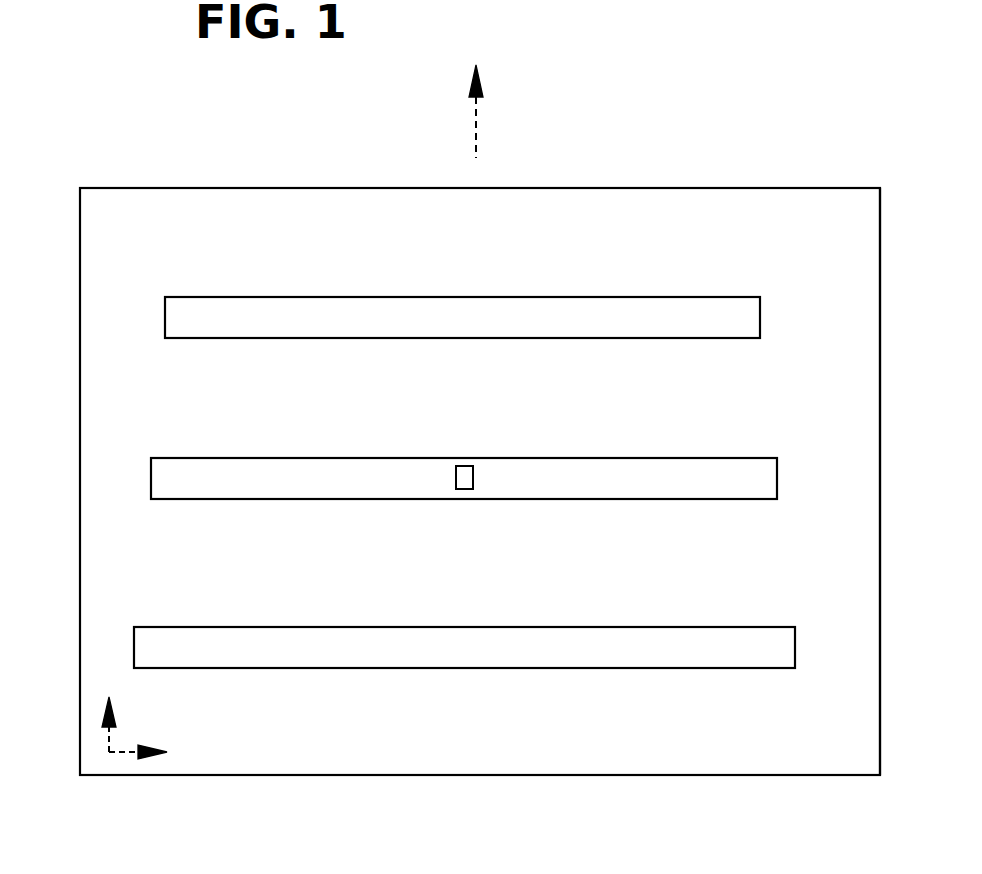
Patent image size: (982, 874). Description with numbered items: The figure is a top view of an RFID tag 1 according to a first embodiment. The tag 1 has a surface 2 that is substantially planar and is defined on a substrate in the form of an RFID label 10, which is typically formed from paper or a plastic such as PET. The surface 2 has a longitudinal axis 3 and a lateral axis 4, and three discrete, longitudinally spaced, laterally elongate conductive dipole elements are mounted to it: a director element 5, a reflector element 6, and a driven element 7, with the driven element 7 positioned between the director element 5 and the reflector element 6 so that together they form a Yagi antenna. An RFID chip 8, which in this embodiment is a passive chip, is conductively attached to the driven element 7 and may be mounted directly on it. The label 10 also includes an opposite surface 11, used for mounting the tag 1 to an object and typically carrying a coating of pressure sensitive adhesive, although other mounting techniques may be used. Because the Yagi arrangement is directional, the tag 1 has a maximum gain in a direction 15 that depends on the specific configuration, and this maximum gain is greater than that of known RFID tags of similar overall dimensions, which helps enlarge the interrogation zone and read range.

The RFID tag 1 is at (316, 166).
The surface 2 is at (210, 208).
The longitudinal axis 3 is at (106, 740).
The lateral axis 4 is at (124, 754).
The director element 5 is at (448, 308).
The reflector element 6 is at (585, 646).
The driven element 7 is at (510, 470).
The RFID chip 8 is at (464, 485).
The RFID label 10 is at (648, 212).
The opposite surface 11 is at (537, 777).
The direction of maximum gain 15 is at (478, 146).